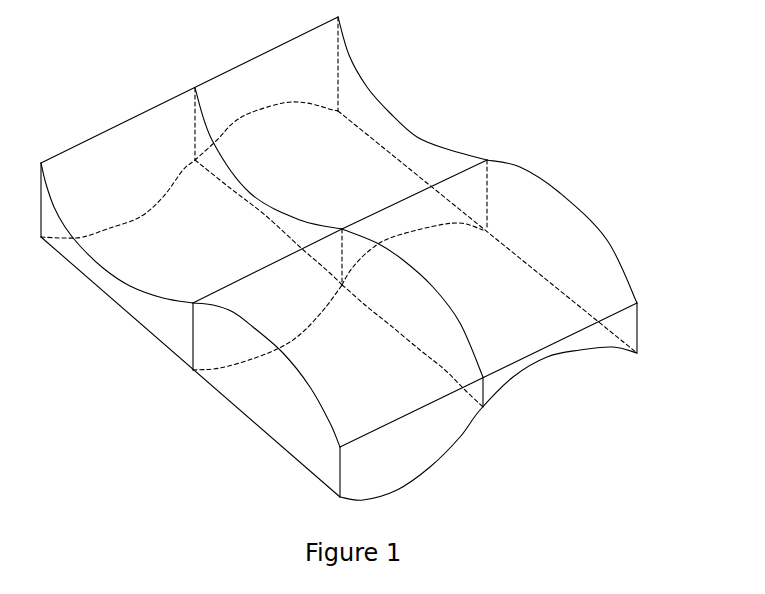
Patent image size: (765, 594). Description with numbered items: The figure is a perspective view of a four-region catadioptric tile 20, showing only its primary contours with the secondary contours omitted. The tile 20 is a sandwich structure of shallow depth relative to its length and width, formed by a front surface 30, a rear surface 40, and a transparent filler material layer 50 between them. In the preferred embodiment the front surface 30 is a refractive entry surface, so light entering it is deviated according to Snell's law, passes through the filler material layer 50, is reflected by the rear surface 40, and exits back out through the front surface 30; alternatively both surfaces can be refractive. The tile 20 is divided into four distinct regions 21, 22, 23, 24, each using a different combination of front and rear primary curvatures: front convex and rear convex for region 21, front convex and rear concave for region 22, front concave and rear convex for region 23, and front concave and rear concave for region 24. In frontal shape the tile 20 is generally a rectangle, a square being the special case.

The four-region catadioptric tile 20 is at (372, 265).
The front convex-rear convex region 21 is at (385, 398).
The front convex-rear concave region 22 is at (515, 296).
The front concave-rear convex region 23 is at (203, 262).
The front concave-rear concave region 24 is at (348, 180).
The front surface 30 is at (607, 241).
The rear surface 40 is at (473, 433).
The transparent filler material layer 50 is at (240, 388).